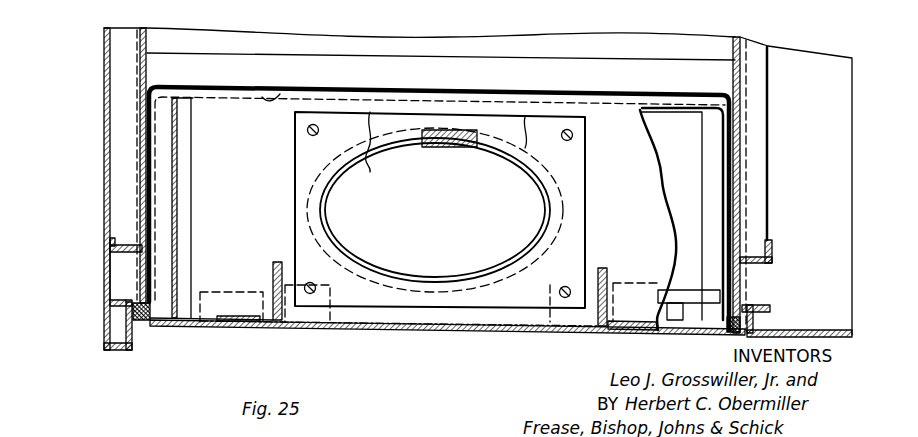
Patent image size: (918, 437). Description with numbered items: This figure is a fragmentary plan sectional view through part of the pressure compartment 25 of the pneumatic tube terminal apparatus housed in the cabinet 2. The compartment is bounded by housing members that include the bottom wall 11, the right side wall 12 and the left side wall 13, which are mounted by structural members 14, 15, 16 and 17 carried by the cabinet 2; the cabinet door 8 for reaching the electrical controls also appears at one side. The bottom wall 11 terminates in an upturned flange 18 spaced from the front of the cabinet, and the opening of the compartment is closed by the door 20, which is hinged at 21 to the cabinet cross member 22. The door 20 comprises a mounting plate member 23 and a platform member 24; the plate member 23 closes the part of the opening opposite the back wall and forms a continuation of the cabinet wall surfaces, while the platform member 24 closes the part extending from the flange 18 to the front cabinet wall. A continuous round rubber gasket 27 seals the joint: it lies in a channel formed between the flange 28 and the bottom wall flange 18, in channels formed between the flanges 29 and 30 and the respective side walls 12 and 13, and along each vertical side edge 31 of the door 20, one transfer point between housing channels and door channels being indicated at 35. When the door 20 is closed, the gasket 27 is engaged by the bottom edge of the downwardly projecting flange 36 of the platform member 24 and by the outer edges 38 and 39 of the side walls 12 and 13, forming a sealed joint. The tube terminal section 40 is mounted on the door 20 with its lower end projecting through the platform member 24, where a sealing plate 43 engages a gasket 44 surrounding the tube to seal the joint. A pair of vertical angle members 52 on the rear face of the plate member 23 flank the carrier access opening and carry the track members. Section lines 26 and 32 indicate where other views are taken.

The cabinet 2 is at (107, 130).
The door 8 is at (825, 332).
The bottom wall 11 is at (657, 42).
The right side wall 12 is at (743, 162).
The left side wall 13 is at (143, 65).
The structural member 14 is at (745, 290).
The structural member 15 is at (117, 268).
The structural member 16 is at (758, 103).
The structural member 17 is at (122, 103).
The upturned flange 18 is at (682, 113).
The door 20 is at (493, 334).
The hinge 21 is at (685, 325).
The cabinet cross member 22 is at (668, 290).
The mounting plate member 23 is at (415, 333).
The platform member 24 is at (628, 203).
The pressure compartment 25 is at (705, 75).
The section line 26 is at (84, 318).
The gasket 27 is at (150, 15).
The flange 28 is at (573, 95).
The flange 29 is at (720, 182).
The flange 30 is at (496, 6).
The side edge 31 is at (130, 318).
The corner block 32 is at (150, 303).
The transfer point 35 is at (727, 325).
The flange 36 is at (280, 94).
The outer edge 38 is at (712, 292).
The outer edge 39 is at (148, 292).
The tube terminal section 40 is at (538, 187).
The sealing plate 43 is at (575, 153).
The gasket 44 is at (490, 146).
The angle members 52 is at (272, 270).